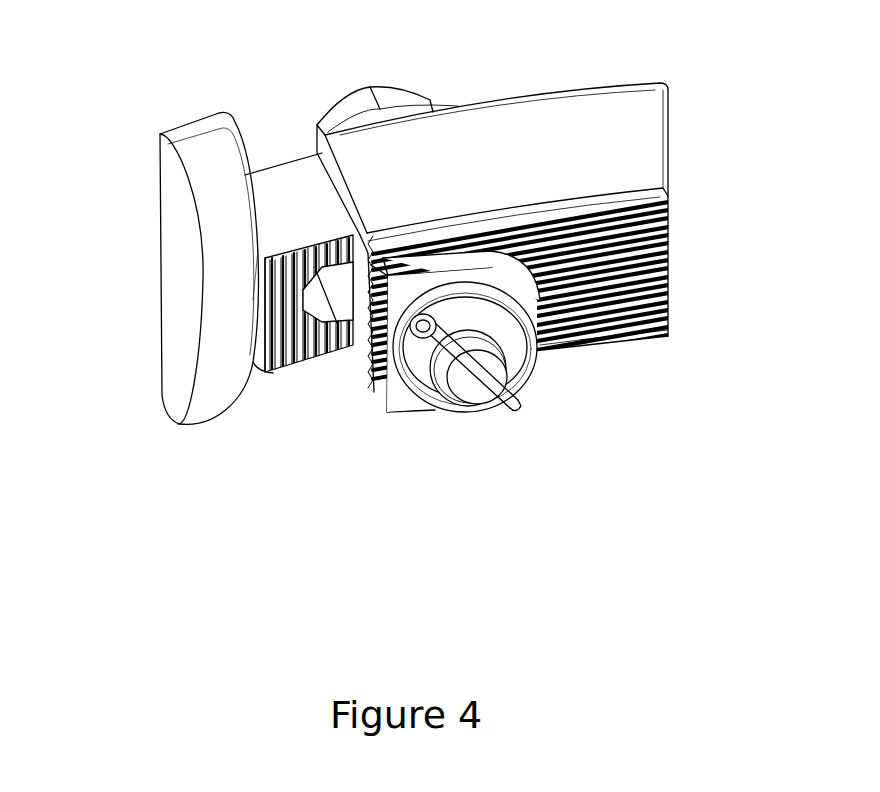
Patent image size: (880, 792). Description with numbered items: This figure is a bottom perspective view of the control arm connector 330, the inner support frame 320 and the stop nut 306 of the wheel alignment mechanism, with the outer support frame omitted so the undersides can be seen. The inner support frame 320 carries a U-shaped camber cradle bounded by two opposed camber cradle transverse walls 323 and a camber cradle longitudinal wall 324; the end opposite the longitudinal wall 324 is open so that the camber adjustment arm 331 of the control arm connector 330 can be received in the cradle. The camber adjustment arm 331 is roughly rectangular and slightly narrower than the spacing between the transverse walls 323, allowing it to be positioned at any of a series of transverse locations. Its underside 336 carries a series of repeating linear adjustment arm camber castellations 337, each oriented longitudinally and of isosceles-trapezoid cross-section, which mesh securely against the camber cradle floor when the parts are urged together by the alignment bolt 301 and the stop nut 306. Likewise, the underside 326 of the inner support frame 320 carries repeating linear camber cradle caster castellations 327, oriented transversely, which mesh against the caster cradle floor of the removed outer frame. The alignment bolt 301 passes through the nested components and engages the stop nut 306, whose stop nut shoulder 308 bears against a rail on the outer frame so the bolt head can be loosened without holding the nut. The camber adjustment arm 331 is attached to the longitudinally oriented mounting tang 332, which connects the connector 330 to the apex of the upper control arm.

The alignment bolt 301 is at (393, 97).
The stop nut 306 is at (410, 420).
The stop nut shoulder 308 is at (373, 400).
The inner support frame 320 is at (582, 112).
The camber cradle transverse walls 323 is at (487, 118).
The camber cradle longitudinal wall 324 is at (670, 227).
The underside of inner support frame 326 is at (575, 330).
The camber cradle caster castellations 327 is at (625, 335).
The control arm connector 330 is at (262, 183).
The camber adjustment arm 331 is at (287, 170).
The mounting tang 332 is at (177, 337).
The underside of camber adjustment arm 336 is at (310, 363).
The adjustment arm camber castellations 337 is at (273, 373).